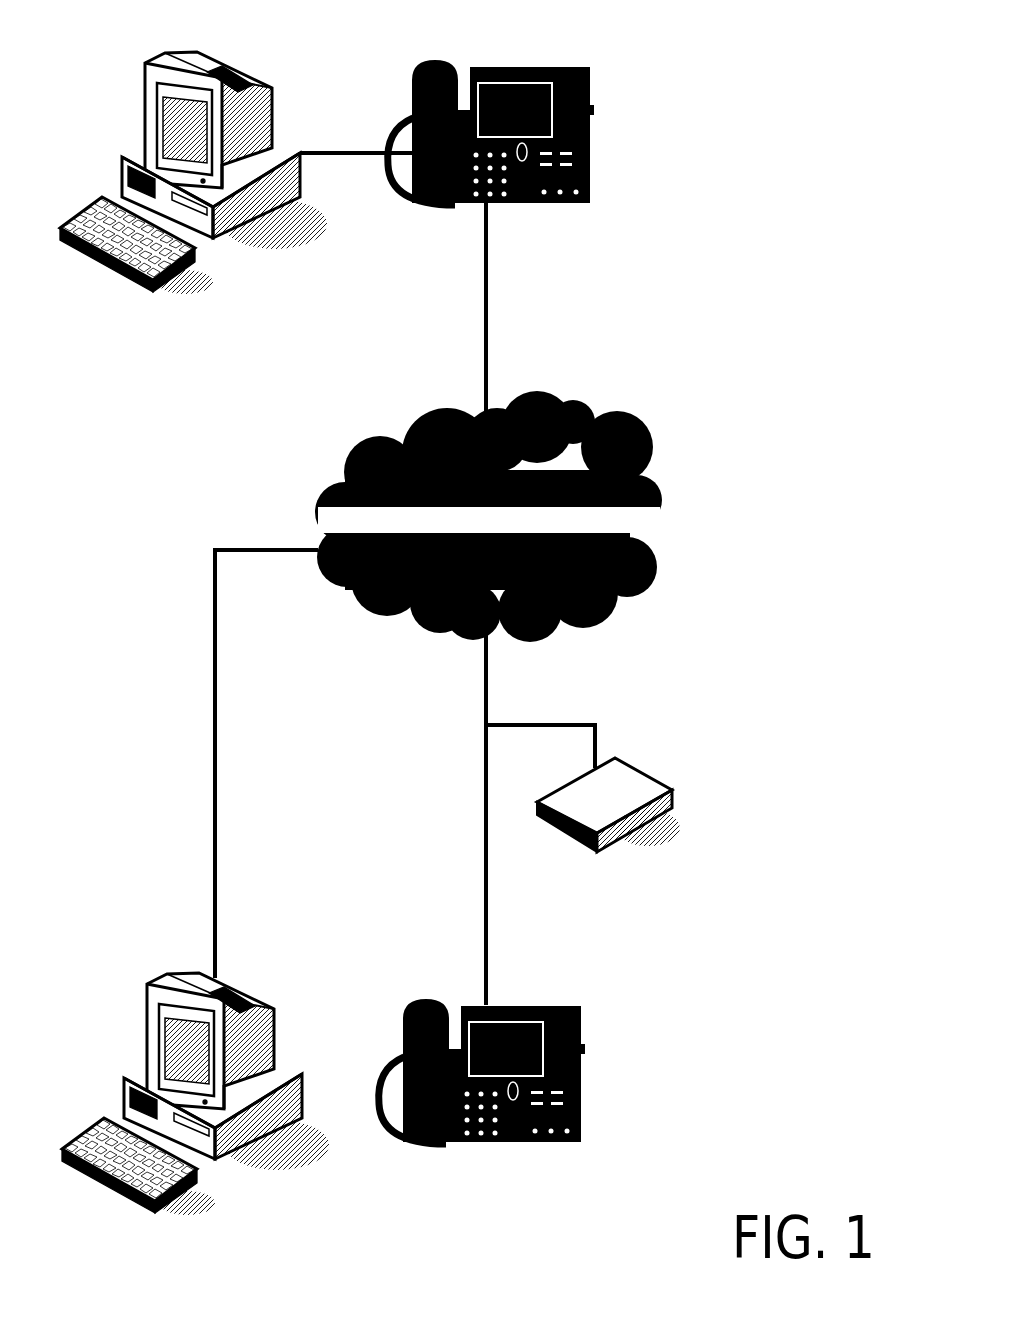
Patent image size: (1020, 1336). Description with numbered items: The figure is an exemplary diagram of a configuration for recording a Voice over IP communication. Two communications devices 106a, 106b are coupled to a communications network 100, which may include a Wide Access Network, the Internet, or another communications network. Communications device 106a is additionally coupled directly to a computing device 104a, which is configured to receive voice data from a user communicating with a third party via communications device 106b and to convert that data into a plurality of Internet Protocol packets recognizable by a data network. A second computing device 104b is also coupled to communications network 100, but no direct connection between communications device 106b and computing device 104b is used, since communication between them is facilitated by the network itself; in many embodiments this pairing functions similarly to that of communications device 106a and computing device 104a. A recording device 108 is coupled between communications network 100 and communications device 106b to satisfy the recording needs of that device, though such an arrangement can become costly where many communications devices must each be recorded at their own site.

The communications network 100 is at (573, 403).
The computing device 104a is at (273, 135).
The computing device 104b is at (273, 1012).
The communications device 106a is at (572, 68).
The communications device 106b is at (568, 1008).
The recording device 108 is at (672, 790).